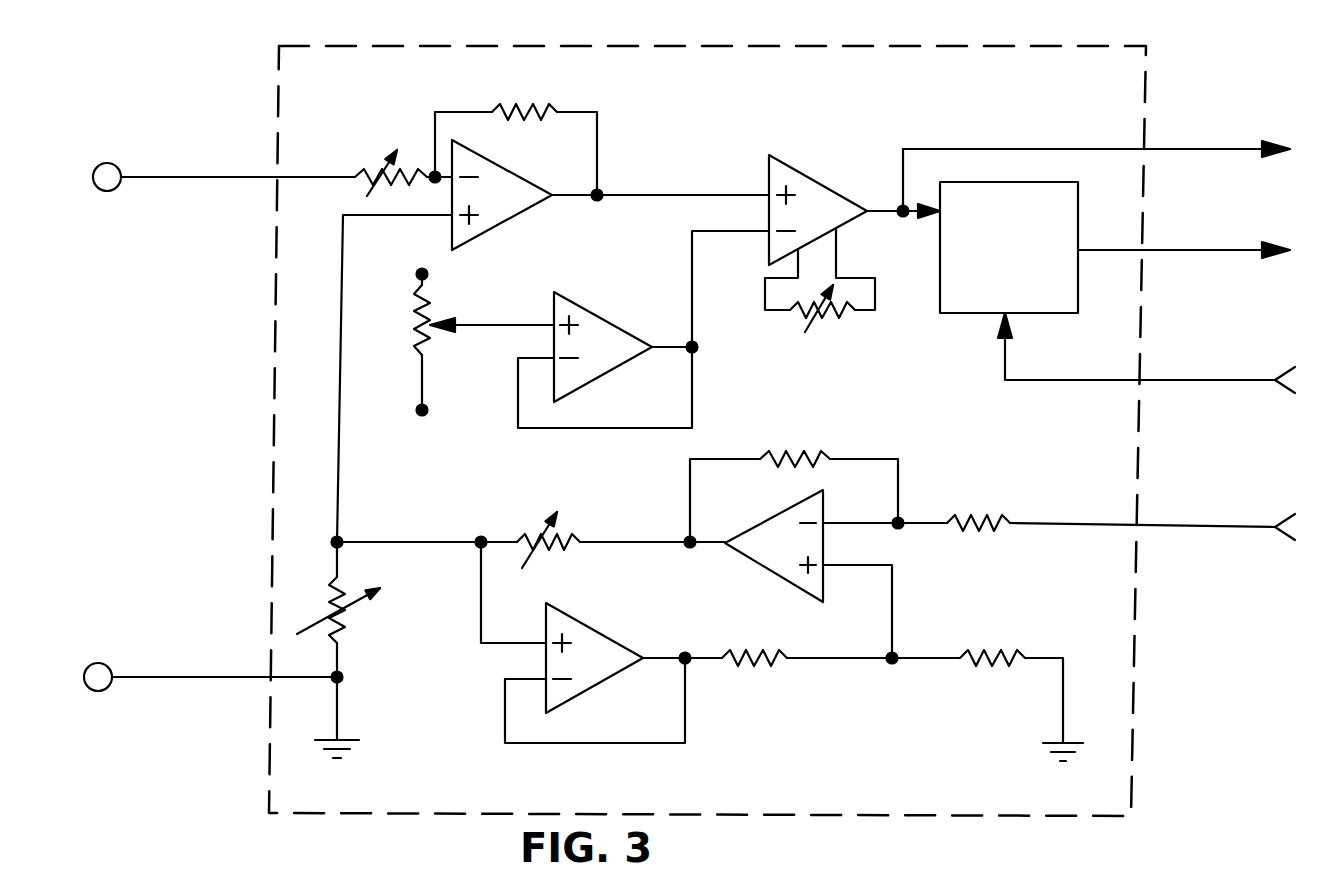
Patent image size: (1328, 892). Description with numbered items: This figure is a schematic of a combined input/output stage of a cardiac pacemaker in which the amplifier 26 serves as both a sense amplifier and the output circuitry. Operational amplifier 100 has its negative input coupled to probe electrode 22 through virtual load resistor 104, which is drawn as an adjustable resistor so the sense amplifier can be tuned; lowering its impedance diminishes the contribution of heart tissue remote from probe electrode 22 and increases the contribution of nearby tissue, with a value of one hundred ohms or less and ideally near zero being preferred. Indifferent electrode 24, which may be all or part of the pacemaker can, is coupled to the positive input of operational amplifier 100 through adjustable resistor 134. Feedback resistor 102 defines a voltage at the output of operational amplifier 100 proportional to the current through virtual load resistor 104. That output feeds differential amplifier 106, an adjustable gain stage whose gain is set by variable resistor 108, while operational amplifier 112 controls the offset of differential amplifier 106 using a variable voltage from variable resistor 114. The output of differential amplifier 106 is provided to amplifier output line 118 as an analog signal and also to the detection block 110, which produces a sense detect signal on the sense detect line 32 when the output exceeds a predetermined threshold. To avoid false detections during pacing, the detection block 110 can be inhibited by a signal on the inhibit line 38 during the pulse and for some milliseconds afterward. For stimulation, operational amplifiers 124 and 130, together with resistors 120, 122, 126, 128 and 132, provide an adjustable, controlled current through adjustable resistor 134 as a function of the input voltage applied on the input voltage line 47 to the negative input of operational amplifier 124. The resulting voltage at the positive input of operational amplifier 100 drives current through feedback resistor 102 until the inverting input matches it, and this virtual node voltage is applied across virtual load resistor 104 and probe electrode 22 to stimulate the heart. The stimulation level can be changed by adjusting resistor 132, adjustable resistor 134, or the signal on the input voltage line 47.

The probe electrode 22 is at (108, 191).
The indifferent electrode 24 is at (100, 663).
The amplifier 26 is at (800, 815).
The sense detect line 32 is at (1237, 252).
The INH line 38 is at (1217, 383).
The VIN line 47 is at (1208, 530).
The operational amplifier 100 is at (520, 210).
The feedback resistor 102 is at (532, 107).
The virtual load resistor 104 is at (370, 170).
The differential amplifier 106 is at (818, 182).
The variable resistor 108 is at (835, 312).
The detector 110 is at (1040, 315).
The operational amplifier 112 is at (607, 323).
The variable resistor 114 is at (415, 338).
The amplifier output line 118 is at (1237, 152).
The resistor 120 is at (800, 450).
The resistor 122 is at (990, 520).
The operational amplifier 124 is at (772, 575).
The resistor 126 is at (996, 656).
The resistor 128 is at (748, 662).
The operational amplifier 130 is at (600, 628).
The resistor 132 is at (562, 532).
The adjustable resistor 134 is at (345, 618).